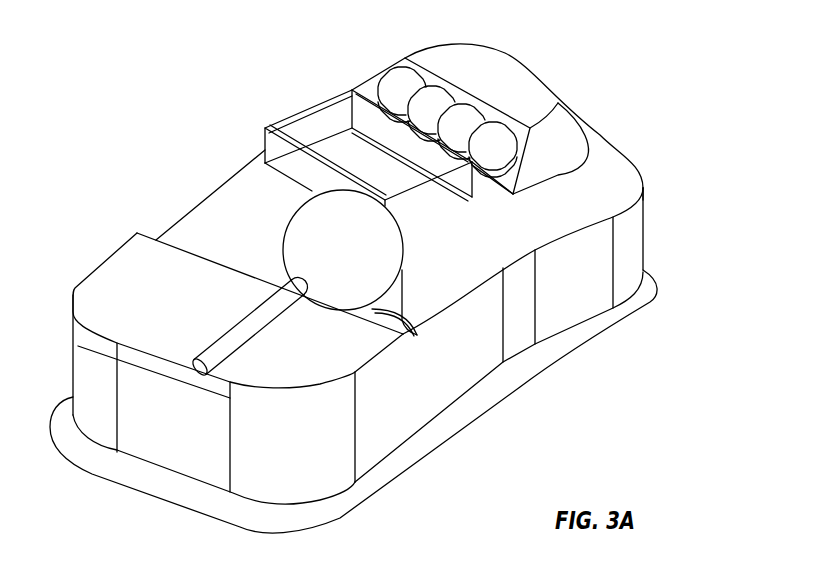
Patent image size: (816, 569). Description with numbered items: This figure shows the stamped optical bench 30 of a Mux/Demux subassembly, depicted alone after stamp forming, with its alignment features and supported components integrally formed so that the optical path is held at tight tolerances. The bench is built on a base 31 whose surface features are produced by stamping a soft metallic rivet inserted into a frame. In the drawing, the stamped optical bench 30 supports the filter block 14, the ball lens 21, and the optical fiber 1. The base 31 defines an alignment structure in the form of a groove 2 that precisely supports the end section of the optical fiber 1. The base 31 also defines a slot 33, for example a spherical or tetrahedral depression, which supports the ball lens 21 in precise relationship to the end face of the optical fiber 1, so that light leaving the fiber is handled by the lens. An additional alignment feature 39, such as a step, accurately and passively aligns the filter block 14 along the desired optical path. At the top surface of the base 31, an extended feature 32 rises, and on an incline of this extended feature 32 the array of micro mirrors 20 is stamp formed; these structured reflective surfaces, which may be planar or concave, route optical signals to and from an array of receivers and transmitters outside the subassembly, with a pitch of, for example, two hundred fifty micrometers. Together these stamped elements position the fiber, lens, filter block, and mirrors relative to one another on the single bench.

The optical fiber 1 is at (223, 343).
The groove 2 is at (257, 333).
The filter block 14 is at (311, 110).
The micro mirrors 20 is at (396, 83).
The ball lens 21 is at (313, 237).
The stamped optical bench 30 is at (673, 158).
The base 31 is at (543, 315).
The extended feature 32 is at (502, 82).
The slot 33 is at (442, 210).
The alignment feature 39 is at (458, 332).